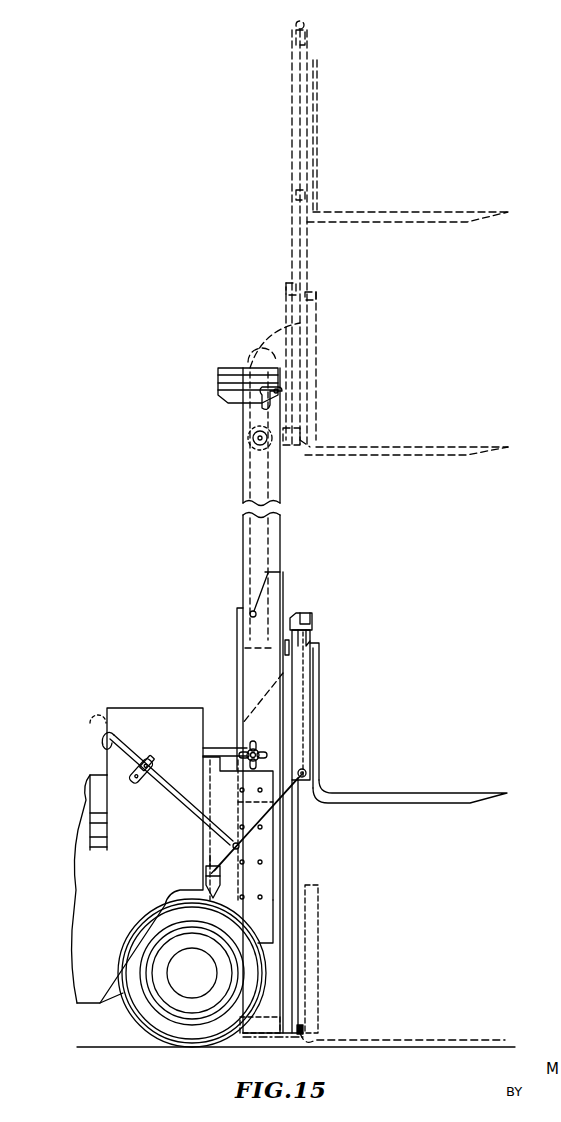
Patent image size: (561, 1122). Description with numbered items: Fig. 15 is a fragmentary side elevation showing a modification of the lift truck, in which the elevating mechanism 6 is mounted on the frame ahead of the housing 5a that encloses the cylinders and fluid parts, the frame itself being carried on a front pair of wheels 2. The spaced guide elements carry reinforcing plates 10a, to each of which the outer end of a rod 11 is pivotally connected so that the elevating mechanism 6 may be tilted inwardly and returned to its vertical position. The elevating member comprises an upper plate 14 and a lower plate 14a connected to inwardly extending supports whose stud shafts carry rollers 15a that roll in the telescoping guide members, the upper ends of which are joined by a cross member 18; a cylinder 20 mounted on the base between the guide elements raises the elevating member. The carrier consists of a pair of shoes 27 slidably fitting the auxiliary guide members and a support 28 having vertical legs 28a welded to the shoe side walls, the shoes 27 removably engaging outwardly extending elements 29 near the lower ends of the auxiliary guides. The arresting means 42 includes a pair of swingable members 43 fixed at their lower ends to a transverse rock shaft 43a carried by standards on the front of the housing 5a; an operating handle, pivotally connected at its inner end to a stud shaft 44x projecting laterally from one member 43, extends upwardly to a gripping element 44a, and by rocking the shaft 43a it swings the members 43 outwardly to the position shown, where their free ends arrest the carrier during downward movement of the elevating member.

The front pair of wheels 2 is at (185, 1035).
The housing 5a is at (137, 855).
The elevating mechanism 6 is at (271, 914).
The reinforcing plates 10a is at (270, 858).
The rod 11 is at (221, 746).
The upper plate 14 is at (292, 690).
The lower plate 14a is at (300, 769).
The rollers 15a is at (250, 441).
The cross member 18 is at (228, 368).
The cylinder 20 is at (255, 670).
The shoes 27 is at (300, 667).
The support 28 is at (410, 798).
The vertical legs 28a is at (319, 722).
The outwardly extending elements 29 is at (305, 1032).
The arresting means 42 is at (197, 791).
The swingable members 43 is at (286, 800).
The rock shaft 43a is at (206, 872).
The gripping element 44a is at (107, 741).
The stud shaft 44x is at (230, 846).